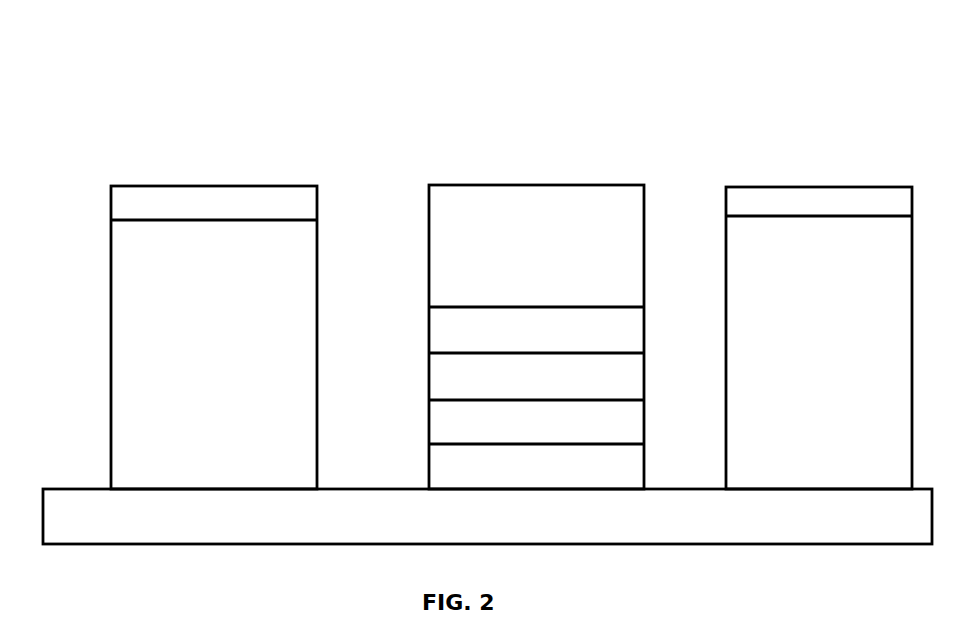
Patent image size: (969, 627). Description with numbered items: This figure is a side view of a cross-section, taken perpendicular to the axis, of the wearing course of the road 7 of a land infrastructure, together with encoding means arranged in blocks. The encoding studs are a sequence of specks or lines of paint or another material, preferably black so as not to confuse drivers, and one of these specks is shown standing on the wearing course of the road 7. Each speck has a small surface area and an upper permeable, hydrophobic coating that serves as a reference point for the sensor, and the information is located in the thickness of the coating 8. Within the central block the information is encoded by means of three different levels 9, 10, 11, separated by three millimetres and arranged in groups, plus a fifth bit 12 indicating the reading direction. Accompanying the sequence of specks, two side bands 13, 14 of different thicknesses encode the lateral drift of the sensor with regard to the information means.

The wearing course of the road 7 is at (88, 511).
The coating 8 is at (740, 186).
The first level 9 is at (455, 307).
The second level 10 is at (458, 352).
The third level 11 is at (458, 400).
The fifth bit 12 is at (475, 442).
The side band 13 is at (153, 218).
The side band 14 is at (873, 216).